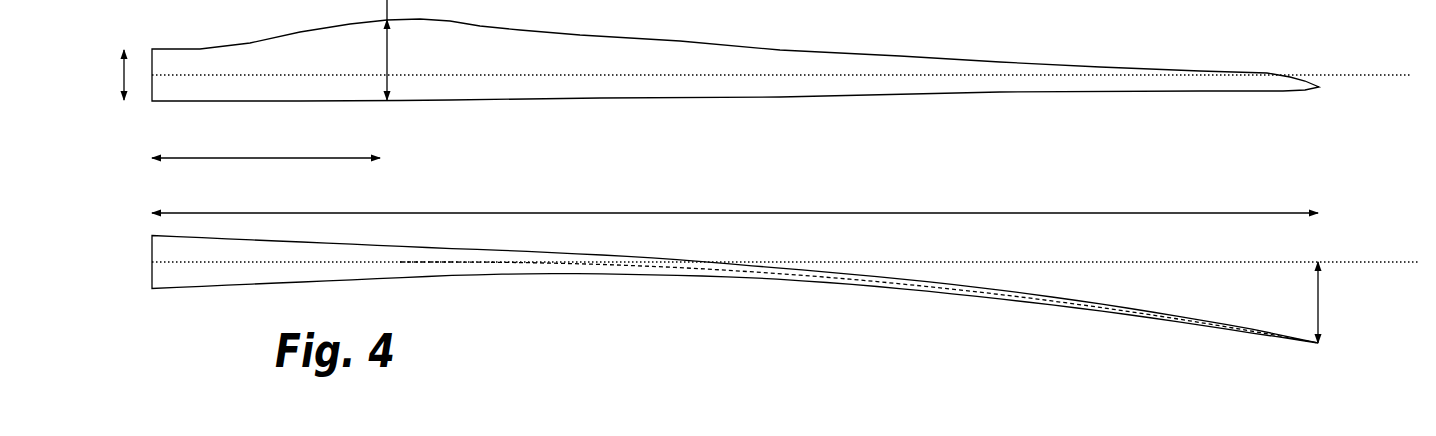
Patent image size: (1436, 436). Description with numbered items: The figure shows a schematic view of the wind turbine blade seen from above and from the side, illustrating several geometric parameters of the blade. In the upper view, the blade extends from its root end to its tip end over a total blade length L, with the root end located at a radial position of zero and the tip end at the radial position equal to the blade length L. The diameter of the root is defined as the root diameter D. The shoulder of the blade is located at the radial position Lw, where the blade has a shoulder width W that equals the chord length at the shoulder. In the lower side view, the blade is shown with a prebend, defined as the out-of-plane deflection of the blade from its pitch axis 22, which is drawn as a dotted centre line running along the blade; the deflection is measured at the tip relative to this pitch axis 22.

The pitch axis 22 is at (614, 75).
The root diameter D is at (113, 75).
The shoulder width W is at (403, 50).
The shoulder position Lw is at (266, 141).
The total blade length L is at (735, 196).